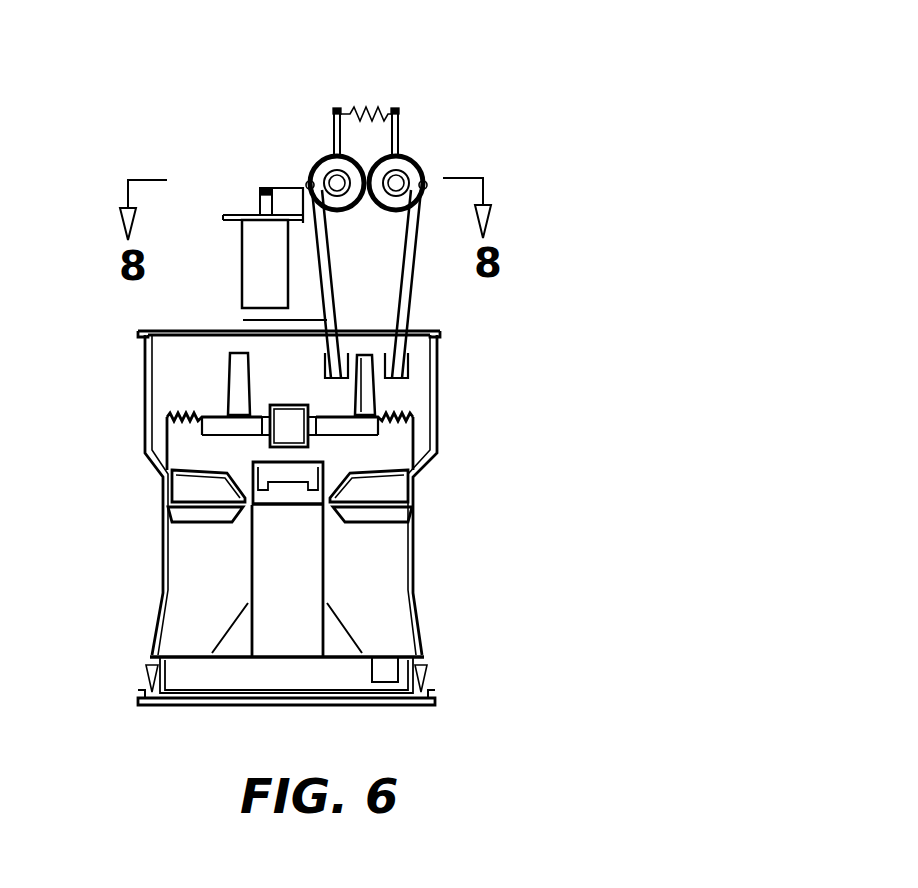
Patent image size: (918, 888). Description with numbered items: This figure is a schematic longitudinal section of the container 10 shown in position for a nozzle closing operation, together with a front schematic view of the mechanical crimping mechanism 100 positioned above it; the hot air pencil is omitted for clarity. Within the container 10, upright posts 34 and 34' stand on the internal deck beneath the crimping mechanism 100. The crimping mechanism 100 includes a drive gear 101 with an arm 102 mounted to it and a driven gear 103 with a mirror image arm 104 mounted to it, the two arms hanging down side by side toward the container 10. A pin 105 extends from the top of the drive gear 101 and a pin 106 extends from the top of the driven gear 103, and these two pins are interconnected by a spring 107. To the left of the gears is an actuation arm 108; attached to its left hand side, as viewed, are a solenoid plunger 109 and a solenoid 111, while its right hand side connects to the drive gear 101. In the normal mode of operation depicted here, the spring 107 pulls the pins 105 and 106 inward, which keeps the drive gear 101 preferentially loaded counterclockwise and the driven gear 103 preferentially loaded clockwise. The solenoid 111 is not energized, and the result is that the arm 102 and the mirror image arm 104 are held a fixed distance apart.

The housing 10 is at (121, 421).
The post 34 is at (422, 374).
The post 34' is at (151, 381).
The mechanical crimping mechanism 100 is at (446, 54).
The drive gear 101 is at (412, 163).
The arm 102 is at (408, 300).
The driven gear 103 is at (318, 154).
The mirror image arm 104 is at (270, 320).
The pin 105 is at (400, 126).
The pin 106 is at (328, 126).
The spring 107 is at (362, 107).
The actuation arm 108 is at (282, 187).
The solenoid plunger 109 is at (258, 196).
The solenoid 111 is at (248, 256).